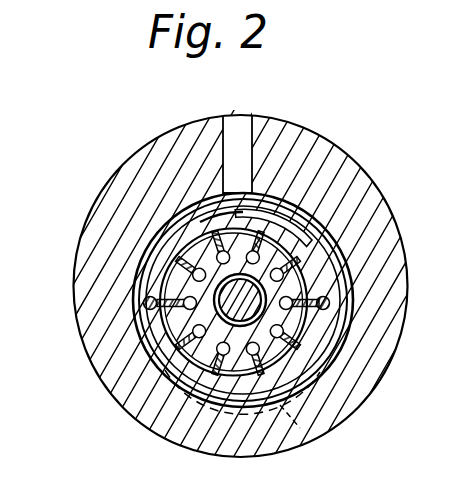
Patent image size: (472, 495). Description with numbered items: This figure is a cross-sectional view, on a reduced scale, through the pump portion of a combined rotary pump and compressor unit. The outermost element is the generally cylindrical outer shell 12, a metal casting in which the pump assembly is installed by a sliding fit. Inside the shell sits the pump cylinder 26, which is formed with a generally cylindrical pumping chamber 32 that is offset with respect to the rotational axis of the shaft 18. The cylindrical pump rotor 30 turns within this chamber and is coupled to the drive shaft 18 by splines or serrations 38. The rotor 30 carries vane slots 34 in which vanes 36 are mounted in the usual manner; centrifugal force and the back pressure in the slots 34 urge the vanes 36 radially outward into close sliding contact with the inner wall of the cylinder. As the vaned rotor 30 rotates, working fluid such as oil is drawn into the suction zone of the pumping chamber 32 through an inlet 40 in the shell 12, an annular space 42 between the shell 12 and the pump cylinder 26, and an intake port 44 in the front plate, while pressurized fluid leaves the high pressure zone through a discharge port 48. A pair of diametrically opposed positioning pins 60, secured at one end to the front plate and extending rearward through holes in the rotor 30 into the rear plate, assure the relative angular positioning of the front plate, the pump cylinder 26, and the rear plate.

The outer shell 12 is at (362, 190).
The shaft 18 is at (255, 310).
The pump cylinder 26 is at (152, 325).
The pump rotor 30 is at (192, 210).
The pumping chamber 32 is at (176, 338).
The vane slots 34 is at (160, 258).
The vanes 36 is at (332, 356).
The splines or serrations 38 is at (342, 246).
The inlet 40 is at (249, 143).
The annular space 42 is at (333, 268).
The intake port 44 is at (208, 200).
The discharge port 48 is at (300, 428).
The positioning pins 60 is at (146, 297).